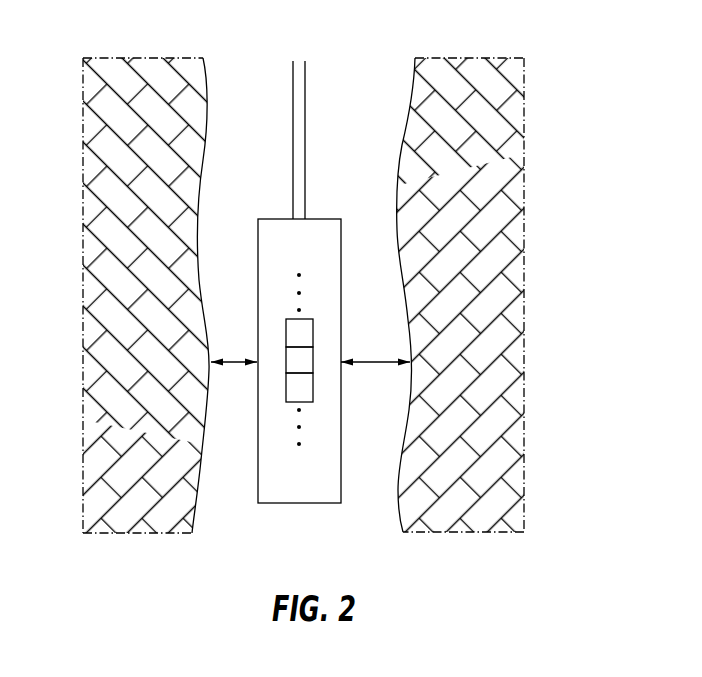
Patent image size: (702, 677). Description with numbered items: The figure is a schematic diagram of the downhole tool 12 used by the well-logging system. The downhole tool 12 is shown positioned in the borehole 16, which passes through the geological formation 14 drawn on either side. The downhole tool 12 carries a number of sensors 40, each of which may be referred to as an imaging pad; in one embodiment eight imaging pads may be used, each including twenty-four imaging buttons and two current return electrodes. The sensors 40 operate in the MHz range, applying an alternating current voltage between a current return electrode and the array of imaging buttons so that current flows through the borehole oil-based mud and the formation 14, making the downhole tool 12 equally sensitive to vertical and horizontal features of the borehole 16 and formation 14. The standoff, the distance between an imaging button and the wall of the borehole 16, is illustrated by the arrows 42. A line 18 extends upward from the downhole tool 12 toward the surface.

The downhole tool 12 is at (258, 257).
The formation 14 is at (493, 130).
The borehole 16 is at (400, 157).
The wireline cable 18 is at (292, 82).
The sensors 40 is at (313, 360).
The arrows 42 is at (235, 364).